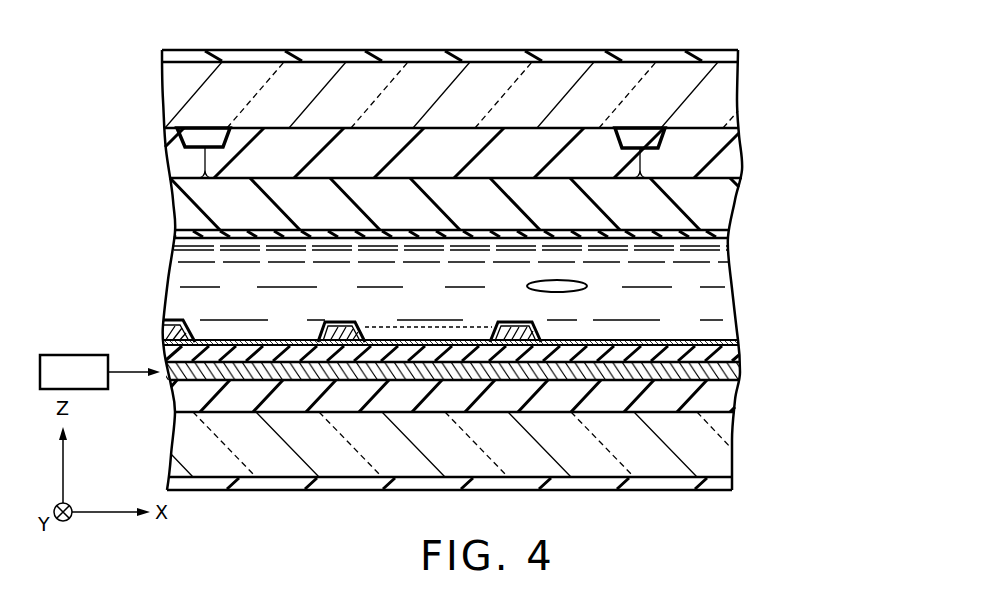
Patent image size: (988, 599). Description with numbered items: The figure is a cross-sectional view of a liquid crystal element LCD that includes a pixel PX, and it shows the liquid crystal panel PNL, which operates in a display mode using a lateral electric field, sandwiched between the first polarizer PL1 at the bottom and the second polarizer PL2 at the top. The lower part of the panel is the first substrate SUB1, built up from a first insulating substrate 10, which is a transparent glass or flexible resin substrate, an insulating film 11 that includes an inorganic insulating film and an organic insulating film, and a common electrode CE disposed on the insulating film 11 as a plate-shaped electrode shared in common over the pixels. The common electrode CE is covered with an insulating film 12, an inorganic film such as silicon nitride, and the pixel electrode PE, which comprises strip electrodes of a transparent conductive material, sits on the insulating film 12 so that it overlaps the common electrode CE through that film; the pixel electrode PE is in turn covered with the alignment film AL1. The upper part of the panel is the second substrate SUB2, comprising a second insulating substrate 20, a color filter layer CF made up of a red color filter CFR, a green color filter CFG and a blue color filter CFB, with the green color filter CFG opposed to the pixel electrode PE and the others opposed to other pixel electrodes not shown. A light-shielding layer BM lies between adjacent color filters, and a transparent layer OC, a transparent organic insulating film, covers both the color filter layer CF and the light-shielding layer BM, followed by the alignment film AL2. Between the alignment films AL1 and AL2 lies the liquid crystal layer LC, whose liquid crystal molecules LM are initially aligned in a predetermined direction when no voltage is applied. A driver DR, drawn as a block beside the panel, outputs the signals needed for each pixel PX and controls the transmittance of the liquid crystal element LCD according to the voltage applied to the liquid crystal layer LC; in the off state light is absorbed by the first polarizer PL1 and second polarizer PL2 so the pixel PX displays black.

The liquid crystal element LCD is at (826, 58).
The liquid crystal panel PNL is at (152, 92).
The second polarizer PL2 is at (730, 56).
The second insulating substrate 20 is at (727, 89).
The second substrate SUB2 is at (758, 166).
The color filter layer CF is at (152, 165).
The red color filter CFR is at (158, 152).
The green color filter CFG is at (347, 148).
The blue color filter CFB is at (737, 140).
The light-shielding layer BM is at (200, 140).
The transparent layer OC is at (725, 205).
The alignment film AL2 is at (725, 235).
The liquid crystal layer LC is at (725, 281).
The liquid crystal molecules LM is at (582, 283).
The pixel PX is at (507, 262).
The first substrate SUB1 is at (752, 410).
The alignment film AL1 is at (737, 340).
The pixel electrode PE is at (493, 321).
The insulating film 12 is at (738, 352).
The common electrode CE is at (738, 371).
The insulating film 11 is at (738, 396).
The first insulating substrate 10 is at (727, 448).
The first polarizer PL1 is at (735, 484).
The driver DR is at (100, 372).